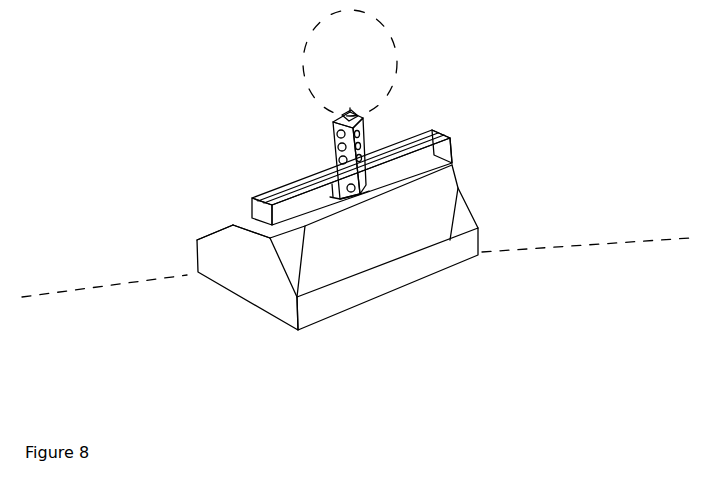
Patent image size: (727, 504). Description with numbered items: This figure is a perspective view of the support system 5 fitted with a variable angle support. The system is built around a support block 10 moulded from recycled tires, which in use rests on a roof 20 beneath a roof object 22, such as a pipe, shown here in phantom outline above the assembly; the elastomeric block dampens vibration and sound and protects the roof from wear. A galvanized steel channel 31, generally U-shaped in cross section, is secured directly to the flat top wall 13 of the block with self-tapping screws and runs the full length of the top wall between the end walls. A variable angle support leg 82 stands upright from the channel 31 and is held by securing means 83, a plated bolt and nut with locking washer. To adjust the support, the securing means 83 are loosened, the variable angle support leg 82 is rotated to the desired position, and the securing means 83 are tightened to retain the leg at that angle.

The support system 5 is at (467, 295).
The support block 10 is at (362, 262).
The top wall 13 is at (233, 226).
The roof 20 is at (620, 242).
The roof object 22 is at (383, 28).
The galvanized steel channel 31 is at (434, 152).
The variable angle support leg 82 is at (362, 118).
The securing means 83 is at (330, 167).